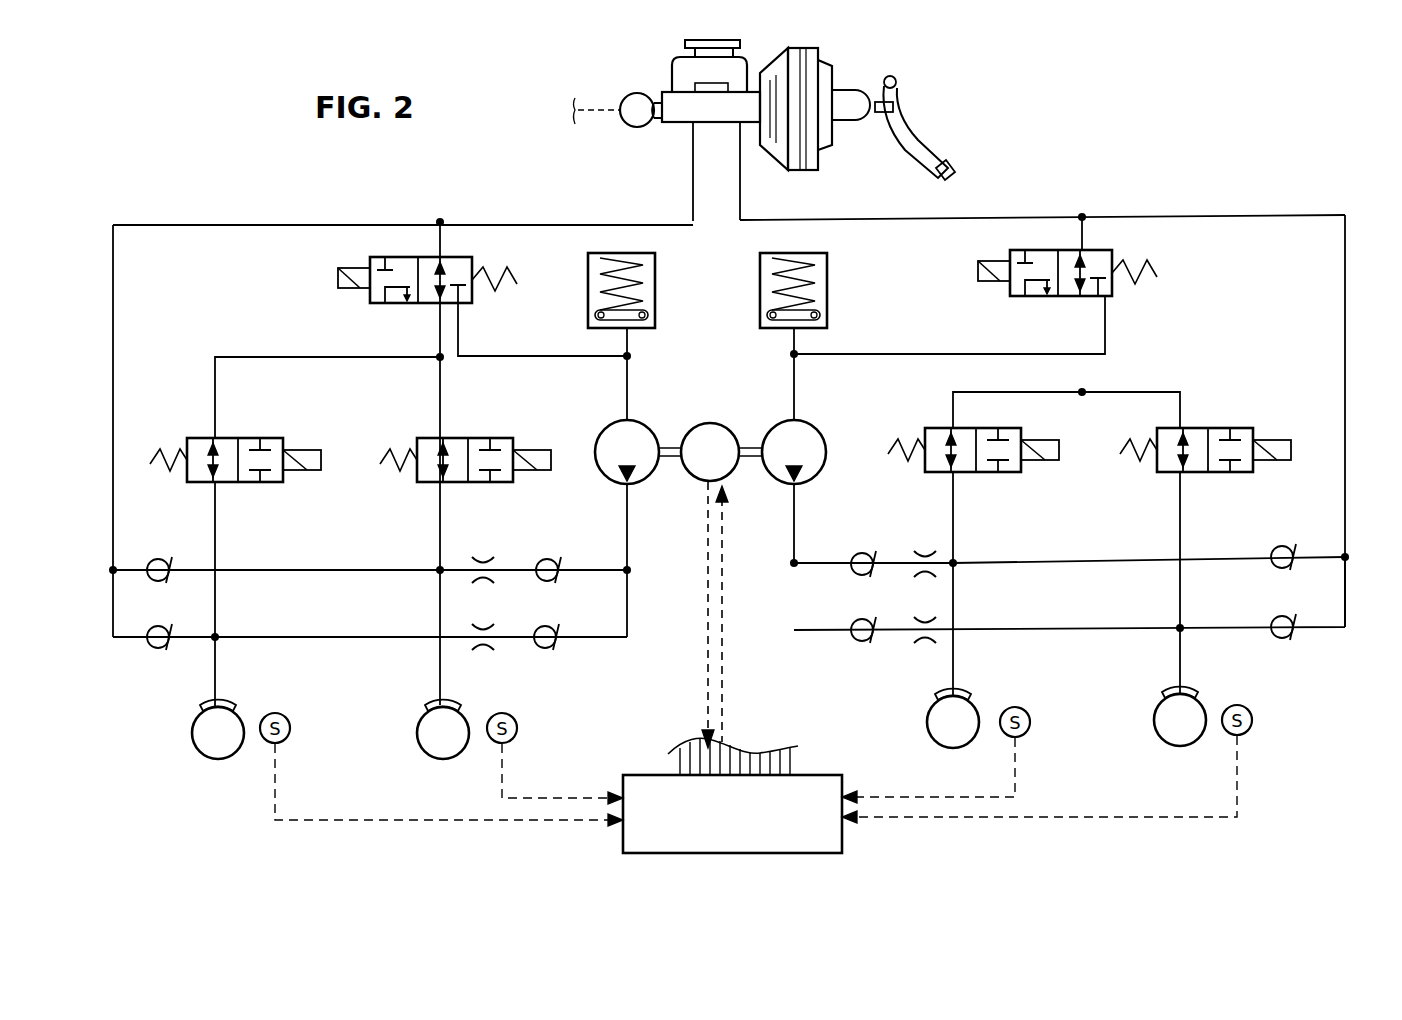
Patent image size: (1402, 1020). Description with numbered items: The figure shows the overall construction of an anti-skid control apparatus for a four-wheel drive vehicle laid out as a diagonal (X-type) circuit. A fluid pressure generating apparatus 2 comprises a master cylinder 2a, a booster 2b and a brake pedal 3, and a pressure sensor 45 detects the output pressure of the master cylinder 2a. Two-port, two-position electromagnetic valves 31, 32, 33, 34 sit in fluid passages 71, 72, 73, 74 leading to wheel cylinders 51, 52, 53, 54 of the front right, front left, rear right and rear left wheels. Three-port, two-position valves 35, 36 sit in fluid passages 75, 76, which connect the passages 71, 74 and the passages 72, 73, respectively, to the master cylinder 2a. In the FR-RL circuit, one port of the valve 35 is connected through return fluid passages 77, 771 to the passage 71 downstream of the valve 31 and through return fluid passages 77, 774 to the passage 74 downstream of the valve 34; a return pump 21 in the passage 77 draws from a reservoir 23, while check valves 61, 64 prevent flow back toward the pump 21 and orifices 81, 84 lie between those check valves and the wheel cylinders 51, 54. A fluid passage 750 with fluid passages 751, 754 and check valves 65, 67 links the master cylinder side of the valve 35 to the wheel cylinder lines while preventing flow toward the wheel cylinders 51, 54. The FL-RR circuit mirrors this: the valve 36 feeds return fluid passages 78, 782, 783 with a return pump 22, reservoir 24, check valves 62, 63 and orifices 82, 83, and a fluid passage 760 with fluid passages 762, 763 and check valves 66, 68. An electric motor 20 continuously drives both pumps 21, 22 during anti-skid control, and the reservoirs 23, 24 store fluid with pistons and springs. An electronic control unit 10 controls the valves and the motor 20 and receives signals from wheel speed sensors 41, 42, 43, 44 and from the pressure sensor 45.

The fluid pressure generating apparatus 2 is at (644, 64).
The master cylinder 2a is at (680, 122).
The booster 2b is at (808, 50).
The brake pedal 3 is at (920, 128).
The pressure sensor 45 is at (622, 96).
The electronic control unit 10 is at (832, 774).
The electric motor 20 is at (712, 424).
The return pump 21 is at (640, 424).
The return pump 22 is at (810, 426).
The reservoir 23 is at (657, 286).
The reservoir 24 is at (758, 286).
The two-port two-position electromagnetic valve 31 is at (272, 436).
The two-port two-position electromagnetic valve 32 is at (1012, 474).
The two-port two-position electromagnetic valve 33 is at (1232, 474).
The two-port two-position electromagnetic valve 34 is at (500, 436).
The three-port two-position electromagnetic valve 35 is at (422, 305).
The three-port two-position electromagnetic valve 36 is at (1066, 298).
The wheel speed sensor 41 is at (291, 724).
The wheel speed sensor 42 is at (1031, 716).
The wheel speed sensor 43 is at (1253, 714).
The wheel speed sensor 44 is at (518, 724).
The wheel cylinder 51 is at (238, 705).
The wheel cylinder 52 is at (972, 694).
The wheel cylinder 53 is at (1200, 692).
The wheel cylinder 54 is at (432, 700).
The check valve 61 is at (556, 626).
The check valve 62 is at (866, 552).
The check valve 63 is at (858, 618).
The check valve 64 is at (550, 558).
The check valve 65 is at (168, 626).
The check valve 66 is at (1290, 545).
The check valve 67 is at (156, 558).
The check valve 68 is at (1276, 616).
The fluid passage 71 is at (217, 382).
The fluid passage 72 is at (1030, 392).
The fluid passage 73 is at (1156, 392).
The fluid passage 74 is at (443, 379).
The fluid passage 75 is at (568, 222).
The fluid passage 76 is at (864, 218).
The return fluid passage 77 is at (531, 355).
The return fluid passage 78 is at (903, 353).
The orifice 81 is at (490, 624).
The orifice 82 is at (924, 550).
The orifice 83 is at (924, 618).
The orifice 84 is at (486, 556).
The fluid passage 750 is at (306, 222).
The fluid passage 751 is at (118, 640).
The fluid passage 754 is at (342, 568).
The fluid passage 760 is at (1203, 216).
The fluid passage 762 is at (1108, 560).
The fluid passage 763 is at (1340, 630).
The return fluid passage 771 is at (333, 635).
The return fluid passage 774 is at (606, 568).
The return fluid passage 782 is at (822, 561).
The return fluid passage 783 is at (808, 632).